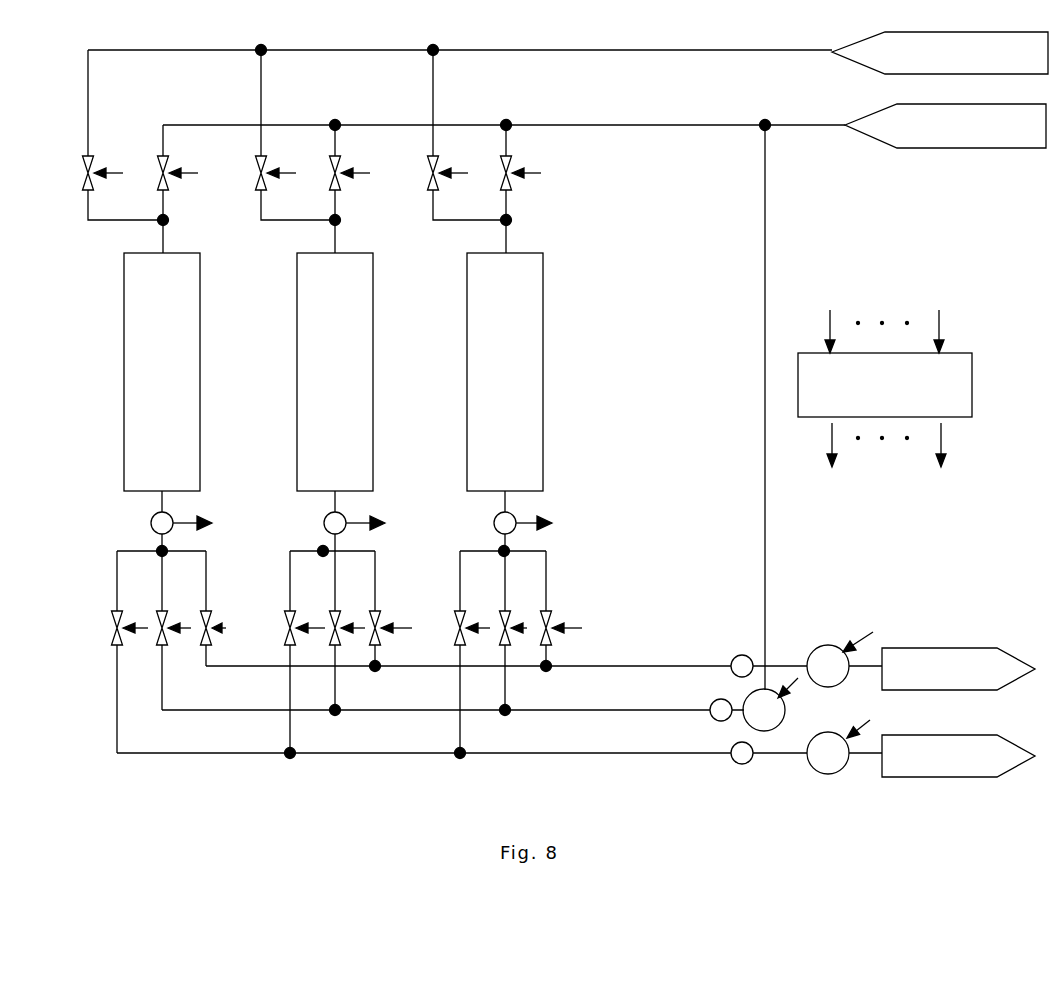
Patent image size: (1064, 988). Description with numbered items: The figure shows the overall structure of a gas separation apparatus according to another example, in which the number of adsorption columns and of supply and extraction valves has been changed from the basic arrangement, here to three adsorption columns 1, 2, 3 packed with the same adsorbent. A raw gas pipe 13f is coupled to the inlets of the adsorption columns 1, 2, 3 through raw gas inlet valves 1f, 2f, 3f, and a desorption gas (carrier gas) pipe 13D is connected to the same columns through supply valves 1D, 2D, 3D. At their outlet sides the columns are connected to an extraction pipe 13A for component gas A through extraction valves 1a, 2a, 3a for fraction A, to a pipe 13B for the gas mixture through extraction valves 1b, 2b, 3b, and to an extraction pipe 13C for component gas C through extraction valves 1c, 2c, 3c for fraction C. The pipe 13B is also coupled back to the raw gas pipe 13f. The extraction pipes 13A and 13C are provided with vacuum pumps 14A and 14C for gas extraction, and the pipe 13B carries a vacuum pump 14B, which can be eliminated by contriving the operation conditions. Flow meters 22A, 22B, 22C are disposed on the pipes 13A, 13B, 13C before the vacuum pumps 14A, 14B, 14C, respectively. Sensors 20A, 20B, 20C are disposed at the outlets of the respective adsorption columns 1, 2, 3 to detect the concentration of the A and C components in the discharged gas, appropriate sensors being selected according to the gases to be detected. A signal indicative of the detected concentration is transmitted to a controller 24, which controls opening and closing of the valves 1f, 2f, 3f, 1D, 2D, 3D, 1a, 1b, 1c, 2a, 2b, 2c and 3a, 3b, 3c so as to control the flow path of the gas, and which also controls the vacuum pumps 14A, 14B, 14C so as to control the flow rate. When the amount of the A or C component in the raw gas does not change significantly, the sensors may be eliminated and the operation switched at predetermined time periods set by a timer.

The adsorption column 1 is at (123, 372).
The adsorption column 2 is at (297, 373).
The adsorption column 3 is at (467, 373).
The extraction valve for fraction A 1a is at (114, 645).
The extraction valve for gas mixture 1b is at (159, 645).
The extraction valve for fraction C 1c is at (203, 645).
The extraction valve for fraction A 2a is at (287, 645).
The extraction valve for gas mixture 2b is at (332, 645).
The extraction valve for fraction C 2c is at (372, 645).
The extraction valve for fraction A 3a is at (457, 645).
The extraction valve for gas mixture 3b is at (502, 645).
The extraction valve for fraction C 3c is at (543, 645).
The supply valve 1D is at (87, 190).
The supply valve 2D is at (260, 190).
The supply valve 3D is at (432, 190).
The raw gas inlet valve 1f is at (166, 157).
The raw gas inlet valve 2f is at (338, 157).
The raw gas inlet valve 3f is at (509, 157).
The desorption gas pipe 13D is at (648, 52).
The raw gas pipe 13f is at (682, 125).
The extraction pipe for component gas A 13A is at (789, 757).
The pipe 13B is at (765, 223).
The extraction pipe for component gas C 13C is at (787, 666).
The vacuum pump 14A is at (825, 774).
The vacuum pump 14B is at (785, 710).
The vacuum pump 14C is at (832, 645).
The sensor 20A is at (151, 523).
The sensor 20B is at (324, 523).
The sensor 20C is at (494, 522).
The flow meter 22A is at (743, 764).
The flow meter 22B is at (721, 721).
The flow meter 22C is at (742, 655).
The controller 24 is at (958, 418).